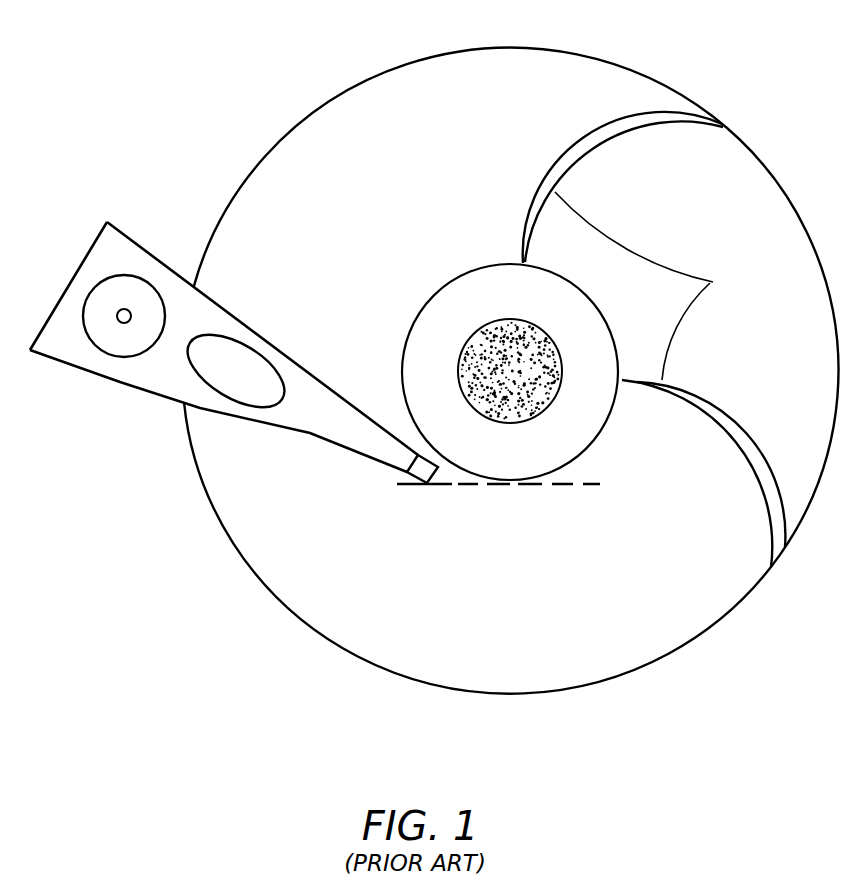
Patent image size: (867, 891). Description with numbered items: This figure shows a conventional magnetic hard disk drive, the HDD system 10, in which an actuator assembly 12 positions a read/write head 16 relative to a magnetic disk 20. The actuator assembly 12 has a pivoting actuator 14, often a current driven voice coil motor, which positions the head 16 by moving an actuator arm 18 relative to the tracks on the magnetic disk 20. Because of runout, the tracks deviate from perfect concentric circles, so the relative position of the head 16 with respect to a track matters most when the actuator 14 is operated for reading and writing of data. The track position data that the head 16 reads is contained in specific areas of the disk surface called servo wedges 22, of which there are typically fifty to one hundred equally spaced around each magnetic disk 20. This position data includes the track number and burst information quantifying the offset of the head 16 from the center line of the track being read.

The HDD system 10 is at (228, 85).
The actuator assembly 12 is at (163, 220).
The pivoting actuator 14 is at (102, 349).
The read/write head 16 is at (422, 484).
The actuator arm 18 is at (371, 417).
The magnetic disk 20 is at (781, 190).
The servo wedges 22 is at (654, 339).